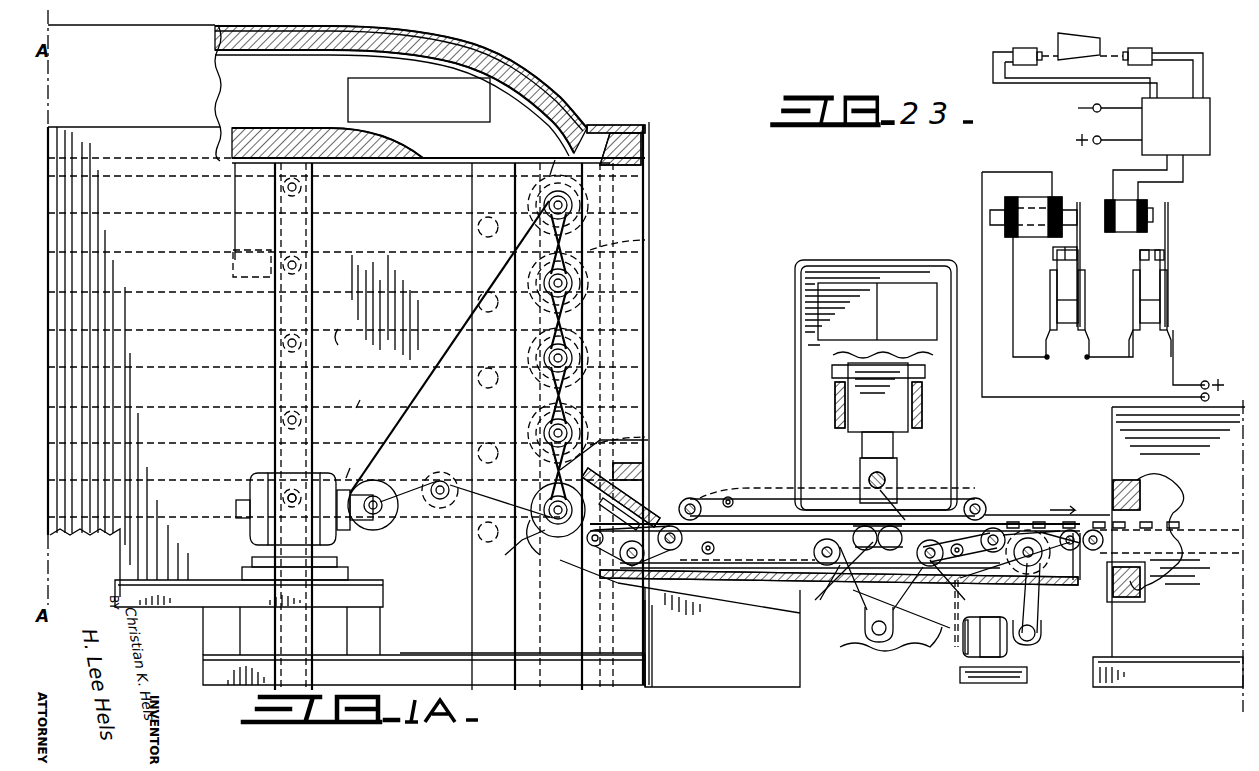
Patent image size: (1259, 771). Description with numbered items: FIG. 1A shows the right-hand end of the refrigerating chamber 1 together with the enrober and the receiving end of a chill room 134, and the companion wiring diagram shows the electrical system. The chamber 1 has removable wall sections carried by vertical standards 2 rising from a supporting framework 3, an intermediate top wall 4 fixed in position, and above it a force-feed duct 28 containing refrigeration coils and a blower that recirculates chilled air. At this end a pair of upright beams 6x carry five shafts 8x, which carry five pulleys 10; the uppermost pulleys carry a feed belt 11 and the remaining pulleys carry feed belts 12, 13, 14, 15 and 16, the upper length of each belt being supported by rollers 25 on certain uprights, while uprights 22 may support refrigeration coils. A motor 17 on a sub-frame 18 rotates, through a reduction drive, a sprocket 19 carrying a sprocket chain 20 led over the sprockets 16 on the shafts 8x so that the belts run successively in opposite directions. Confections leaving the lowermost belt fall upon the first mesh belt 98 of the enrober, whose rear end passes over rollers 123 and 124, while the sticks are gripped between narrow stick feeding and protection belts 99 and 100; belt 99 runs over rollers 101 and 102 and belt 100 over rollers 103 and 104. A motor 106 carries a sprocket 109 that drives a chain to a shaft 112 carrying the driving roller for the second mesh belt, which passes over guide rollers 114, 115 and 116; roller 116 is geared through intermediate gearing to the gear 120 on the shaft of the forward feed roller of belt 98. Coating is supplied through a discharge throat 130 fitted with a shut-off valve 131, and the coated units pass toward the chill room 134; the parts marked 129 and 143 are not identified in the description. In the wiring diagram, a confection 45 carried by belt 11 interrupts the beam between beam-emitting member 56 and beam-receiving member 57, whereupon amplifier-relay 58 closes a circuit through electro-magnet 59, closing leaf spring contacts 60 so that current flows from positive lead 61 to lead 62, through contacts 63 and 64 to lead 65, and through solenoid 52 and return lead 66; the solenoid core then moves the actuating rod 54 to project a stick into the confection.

In FIG. 1A, the refrigerating chamber 1 is at (134, 93).
In FIG. 1A, the force-feed duct 28 is at (401, 91).
In FIG. 1A, the intermediate top wall 4 is at (300, 130).
In FIG. 1A, the feed belt 11 is at (378, 183).
In FIG. 1A, the vertical standards 2 is at (361, 426).
In FIG. 1A, the supporting rollers 25 is at (302, 190).
In FIG. 1A, the pulleys 10 is at (585, 188).
In FIG. 1A, the feed belt 12 is at (385, 307).
In FIG. 1A, the feed belt 13 is at (349, 346).
In FIG. 1A, the feed belt 14 is at (362, 394).
In FIG. 1A, the feed belt 15 is at (357, 465).
In FIG. 1A, the uprights 22 is at (478, 230).
In FIG. 1A, the shafts 8x is at (566, 204).
In FIG. 1A, the sprocket chain 20 is at (462, 349).
In FIG. 1A, the motor 17 is at (293, 526).
In FIG. 1A, the sub-frame 18 is at (389, 529).
In FIG. 1A, the sprocket 19 is at (436, 480).
In FIG. 1A, the supporting framework 3 is at (380, 633).
In FIG. 1A, the upright beams 6x is at (553, 170).
In FIG. 1A, the sprockets 16 is at (639, 340).
In FIG. 1A, the roller 123 is at (575, 560).
In FIG. 1A, the roller 101 is at (675, 500).
In FIG. 1A, the roller 124 is at (640, 508).
In FIG. 1A, the stick feeding and protection belt 99 is at (766, 516).
In FIG. 1A, the stick feeding and protection belt 100 is at (729, 540).
In FIG. 1A, the first mesh belt 98 is at (695, 483).
In FIG. 1A, the roller 103 is at (673, 555).
In FIG. 1A, the roller 102 is at (990, 530).
In FIG. 1A, the shut-off valve 131 is at (884, 476).
In FIG. 1A, the discharge throat 130 is at (890, 495).
In FIG. 1A, the gear 120 is at (850, 580).
In FIG. 1A, the feed roller 116 is at (930, 568).
In FIG. 1A, the motor 106 is at (1040, 630).
In FIG. 1A, the shaft 112 is at (1030, 575).
In FIG. 1A, the guide roller 115 is at (1000, 588).
In FIG. 1A, the sprocket 109 is at (980, 652).
In FIG. 1A, the panel 129 is at (780, 600).
In FIG. 1A, the roller 104 is at (1080, 516).
In FIG. 1A, the guide roller 114 is at (1085, 505).
In FIG. 1A, the chill room 134 is at (1169, 556).
In FIG. 1A, the drum 143 is at (1175, 532).
In FIG. 23, the amplifier-relay 58 is at (1205, 118).
In FIG. 23, the beam-emitting member 56 is at (1025, 48).
In FIG. 23, the beam-receiving member 57 is at (1140, 50).
In FIG. 23, the confection 45 is at (1085, 42).
In FIG. 23, the actuating rod 54 is at (990, 213).
In FIG. 23, the solenoid 52 is at (1026, 208).
In FIG. 23, the flexible leaf spring contact 63 is at (1125, 232).
In FIG. 23, the return lead 66 is at (982, 378).
In FIG. 23, the flexible leaf spring contact 64 is at (1053, 253).
In FIG. 23, the lead 65 is at (1044, 320).
In FIG. 23, the electro-magnet 59 is at (1135, 303).
In FIG. 23, the flexible leaf spring contacts 60 is at (1160, 253).
In FIG. 23, the lead 62 is at (1102, 356).
In FIG. 23, the positive lead 61 is at (1172, 360).